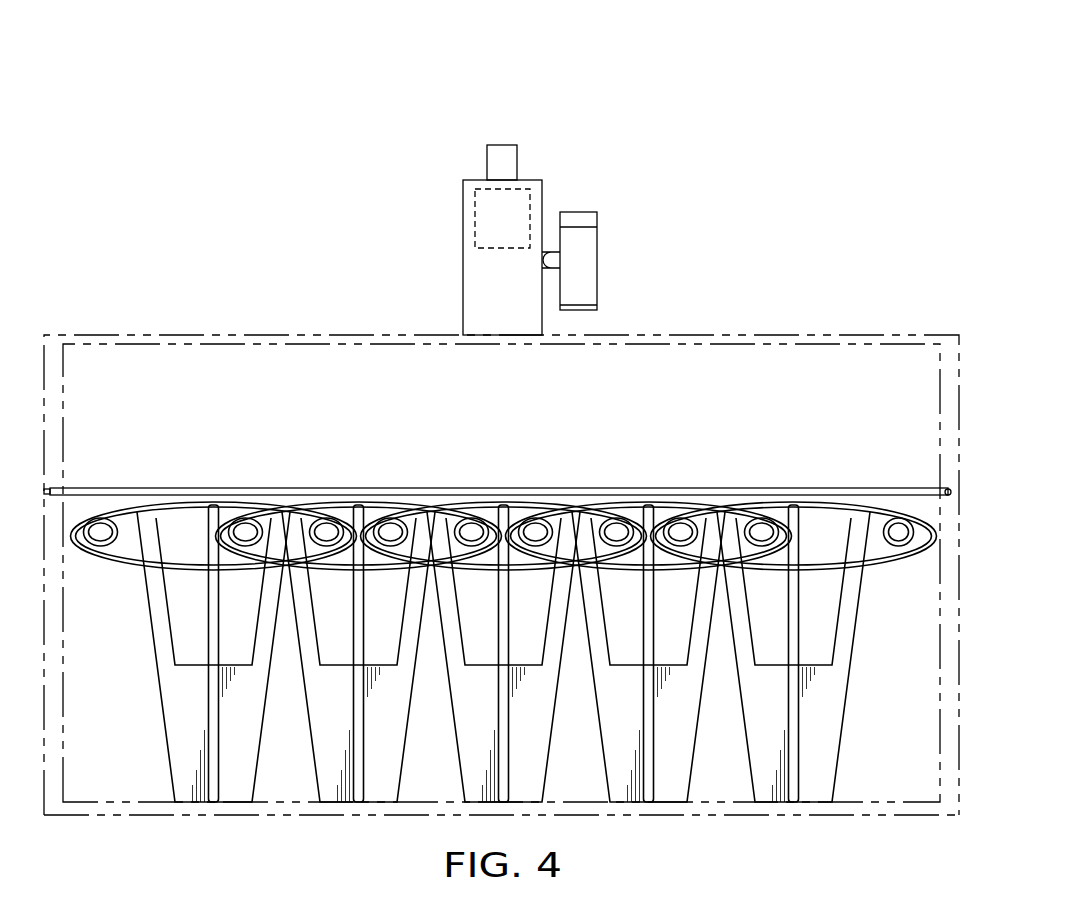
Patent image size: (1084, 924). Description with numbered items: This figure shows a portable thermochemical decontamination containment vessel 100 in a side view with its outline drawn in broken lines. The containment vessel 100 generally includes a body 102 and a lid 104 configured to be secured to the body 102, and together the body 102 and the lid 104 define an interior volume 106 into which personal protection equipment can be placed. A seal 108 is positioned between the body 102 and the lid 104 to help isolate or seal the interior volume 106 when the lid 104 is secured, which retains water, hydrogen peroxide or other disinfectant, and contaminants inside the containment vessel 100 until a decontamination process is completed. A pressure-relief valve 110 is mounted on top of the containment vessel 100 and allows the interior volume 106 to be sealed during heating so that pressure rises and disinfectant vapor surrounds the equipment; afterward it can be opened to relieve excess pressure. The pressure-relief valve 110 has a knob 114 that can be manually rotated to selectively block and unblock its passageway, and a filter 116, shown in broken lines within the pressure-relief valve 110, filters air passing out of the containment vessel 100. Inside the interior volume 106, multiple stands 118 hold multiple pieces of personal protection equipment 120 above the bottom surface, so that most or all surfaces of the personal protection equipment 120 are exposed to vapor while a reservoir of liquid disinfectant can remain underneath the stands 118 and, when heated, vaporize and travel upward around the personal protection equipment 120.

The containment vessel 100 is at (731, 79).
The body 102 is at (827, 818).
The lid 104 is at (828, 334).
The interior volume 106 is at (216, 456).
The seal 108 is at (860, 487).
The pressure-relief valve 110 is at (446, 259).
The knob 114 is at (598, 260).
The filter 116 is at (472, 204).
The stands 118 is at (844, 746).
The personal protection equipment 120 is at (694, 506).